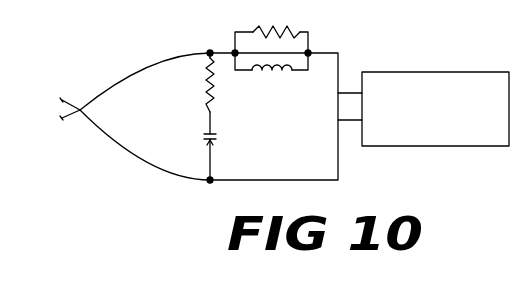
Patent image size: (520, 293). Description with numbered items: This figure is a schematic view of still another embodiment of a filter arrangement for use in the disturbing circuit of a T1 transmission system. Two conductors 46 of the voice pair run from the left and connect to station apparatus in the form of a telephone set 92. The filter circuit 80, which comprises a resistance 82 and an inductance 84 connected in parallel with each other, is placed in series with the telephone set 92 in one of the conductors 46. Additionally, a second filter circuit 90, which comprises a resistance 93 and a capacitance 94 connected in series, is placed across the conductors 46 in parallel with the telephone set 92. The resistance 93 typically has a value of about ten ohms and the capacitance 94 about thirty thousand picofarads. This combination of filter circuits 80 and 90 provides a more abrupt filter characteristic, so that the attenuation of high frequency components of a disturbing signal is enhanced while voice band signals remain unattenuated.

The voice pair conductors 46 is at (144, 70).
The filter circuit 80 is at (320, 38).
The resistance 82 is at (266, 28).
The inductance 84 is at (270, 75).
The filter circuit 90 is at (190, 118).
The telephone set 92 is at (428, 71).
The resistance 93 is at (215, 97).
The capacitance 94 is at (217, 140).